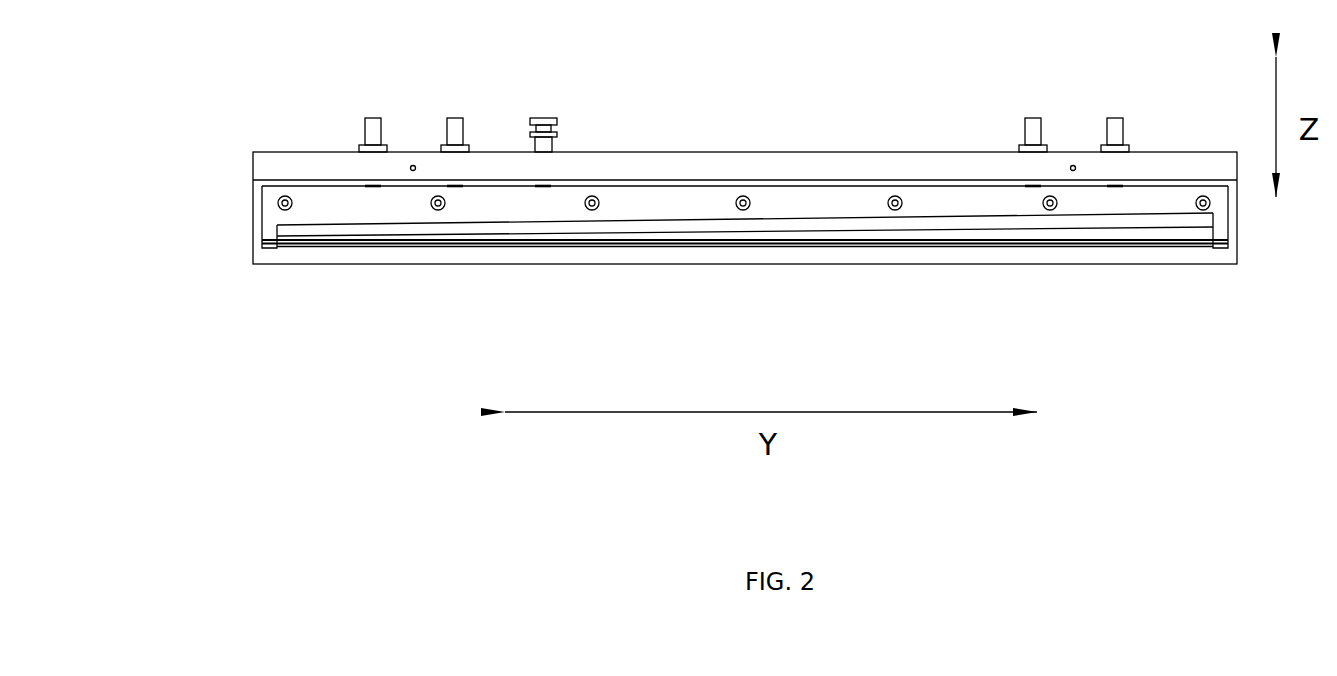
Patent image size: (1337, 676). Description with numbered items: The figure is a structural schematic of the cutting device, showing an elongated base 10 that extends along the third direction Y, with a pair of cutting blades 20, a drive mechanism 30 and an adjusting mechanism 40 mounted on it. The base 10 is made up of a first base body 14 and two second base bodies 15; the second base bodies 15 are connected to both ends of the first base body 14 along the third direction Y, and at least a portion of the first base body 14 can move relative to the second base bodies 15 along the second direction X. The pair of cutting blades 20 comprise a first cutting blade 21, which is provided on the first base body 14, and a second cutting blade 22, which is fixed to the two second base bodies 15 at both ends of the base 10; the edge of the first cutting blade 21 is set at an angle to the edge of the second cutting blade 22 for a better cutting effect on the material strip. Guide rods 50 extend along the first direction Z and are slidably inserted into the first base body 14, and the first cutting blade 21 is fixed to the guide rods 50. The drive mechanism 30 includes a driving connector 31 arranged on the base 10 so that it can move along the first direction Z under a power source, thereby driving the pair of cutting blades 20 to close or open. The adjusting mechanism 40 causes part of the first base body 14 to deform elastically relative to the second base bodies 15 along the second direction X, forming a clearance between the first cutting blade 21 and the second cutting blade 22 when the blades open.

The base 10 is at (703, 137).
The first base body 14 is at (335, 165).
The second base body 15 is at (258, 210).
The pair of cutting blades 20 is at (745, 288).
The first cutting blade 21 is at (866, 232).
The second cutting blade 22 is at (722, 253).
The drive mechanism 30 is at (606, 88).
The driving connector 31 is at (543, 117).
The adjusting mechanism 40 is at (408, 176).
The guide rod 50 is at (375, 117).